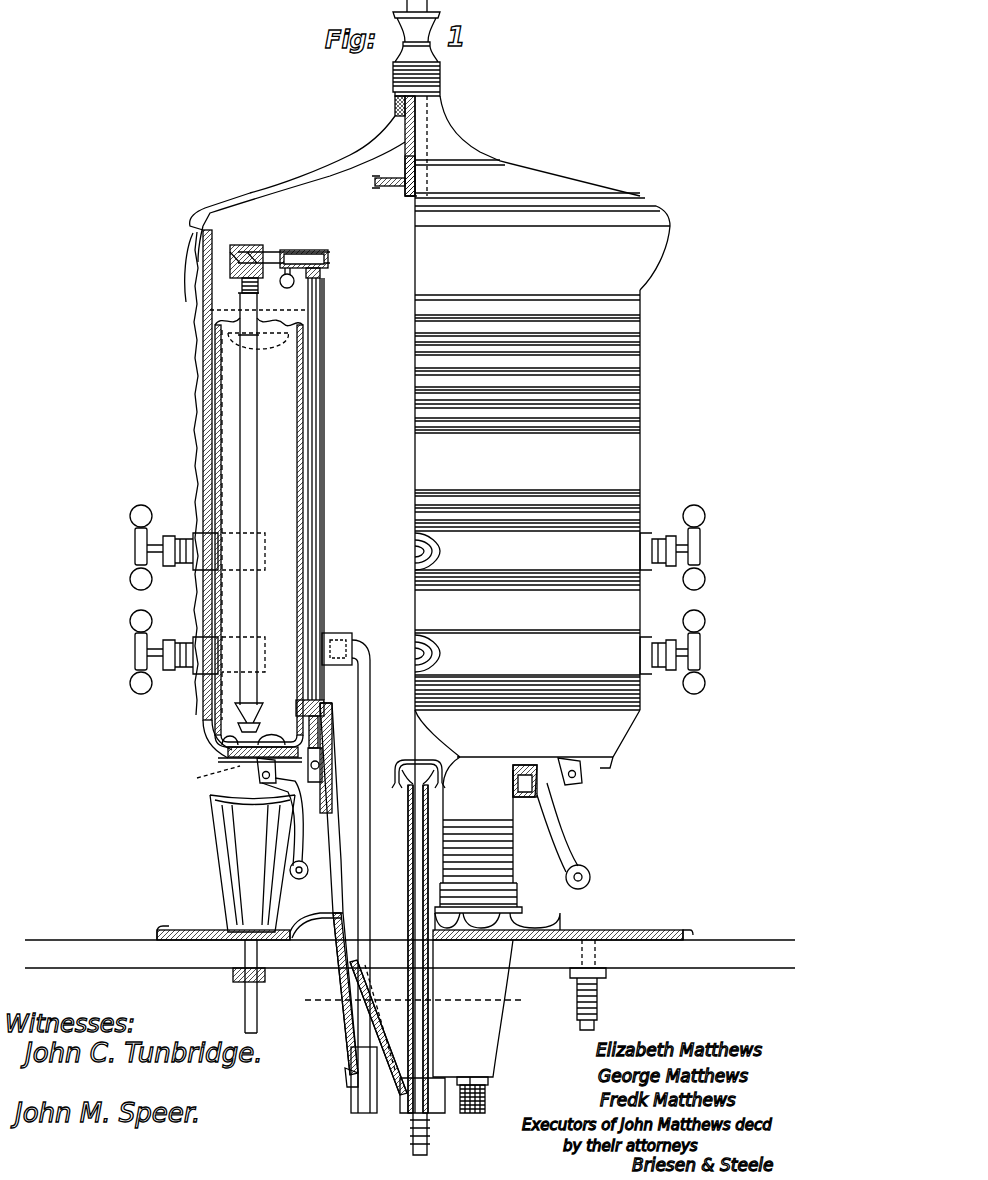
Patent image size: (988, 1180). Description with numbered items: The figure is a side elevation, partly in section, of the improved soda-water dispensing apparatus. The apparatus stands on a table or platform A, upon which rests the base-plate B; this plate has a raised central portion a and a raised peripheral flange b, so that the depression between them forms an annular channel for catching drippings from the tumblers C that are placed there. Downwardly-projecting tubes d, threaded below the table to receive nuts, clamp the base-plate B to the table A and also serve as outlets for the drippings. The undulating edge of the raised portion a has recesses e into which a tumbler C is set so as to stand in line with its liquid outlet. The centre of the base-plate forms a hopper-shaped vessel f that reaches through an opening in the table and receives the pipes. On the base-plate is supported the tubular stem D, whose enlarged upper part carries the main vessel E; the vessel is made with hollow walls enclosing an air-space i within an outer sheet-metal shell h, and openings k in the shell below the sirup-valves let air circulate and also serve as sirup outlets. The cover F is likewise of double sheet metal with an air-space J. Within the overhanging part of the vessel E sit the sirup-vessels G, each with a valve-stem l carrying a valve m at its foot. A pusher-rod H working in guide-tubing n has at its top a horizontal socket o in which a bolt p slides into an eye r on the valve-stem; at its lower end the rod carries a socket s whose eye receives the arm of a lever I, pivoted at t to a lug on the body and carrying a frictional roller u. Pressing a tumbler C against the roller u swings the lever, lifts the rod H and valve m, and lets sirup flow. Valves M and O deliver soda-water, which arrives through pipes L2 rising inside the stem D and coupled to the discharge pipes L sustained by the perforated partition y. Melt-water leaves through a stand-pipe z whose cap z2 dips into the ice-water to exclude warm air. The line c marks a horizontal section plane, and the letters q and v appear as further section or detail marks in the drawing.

The table or platform A is at (410, 953).
The base-plate B is at (420, 926).
The raised peripheral flange b is at (425, 925).
The tumbler C is at (252, 863).
The tubular stem D is at (480, 895).
The main vessel E is at (195, 262).
The cover F is at (300, 162).
The sirup-vessel G is at (257, 536).
The pusher-rod H is at (320, 296).
The lever I is at (575, 815).
The air-space of cover J is at (330, 206).
The soda-water discharge pipe L is at (352, 832).
The aerated-beverage conveying pipe L2 is at (512, 1117).
The valve M is at (98, 660).
The valve O is at (417, 547).
The raised central portion a is at (447, 921).
The section line c is at (415, 998).
The downwardly-projecting tube d is at (424, 986).
The recess e is at (497, 921).
The hopper-shaped vessel f is at (413, 1012).
The outer shell h is at (370, 525).
The air-space i is at (262, 599).
The opening k is at (211, 776).
The valve-stem l is at (247, 499).
The valve m is at (255, 717).
The guide-tubing n is at (329, 489).
The horizontal socket o is at (304, 253).
The bolt p is at (278, 253).
The section line q is at (316, 918).
The eye r is at (246, 260).
The socket s is at (418, 773).
The pivot t is at (257, 778).
The frictional roller u is at (446, 877).
The strut v is at (366, 1027).
The perforated partition y is at (306, 290).
The stand-pipe z is at (421, 970).
The cap z2 is at (418, 762).